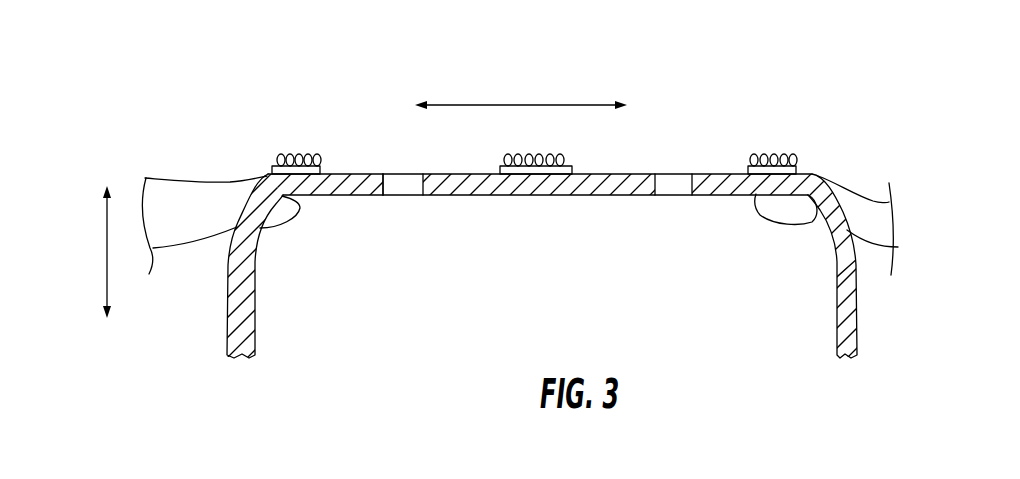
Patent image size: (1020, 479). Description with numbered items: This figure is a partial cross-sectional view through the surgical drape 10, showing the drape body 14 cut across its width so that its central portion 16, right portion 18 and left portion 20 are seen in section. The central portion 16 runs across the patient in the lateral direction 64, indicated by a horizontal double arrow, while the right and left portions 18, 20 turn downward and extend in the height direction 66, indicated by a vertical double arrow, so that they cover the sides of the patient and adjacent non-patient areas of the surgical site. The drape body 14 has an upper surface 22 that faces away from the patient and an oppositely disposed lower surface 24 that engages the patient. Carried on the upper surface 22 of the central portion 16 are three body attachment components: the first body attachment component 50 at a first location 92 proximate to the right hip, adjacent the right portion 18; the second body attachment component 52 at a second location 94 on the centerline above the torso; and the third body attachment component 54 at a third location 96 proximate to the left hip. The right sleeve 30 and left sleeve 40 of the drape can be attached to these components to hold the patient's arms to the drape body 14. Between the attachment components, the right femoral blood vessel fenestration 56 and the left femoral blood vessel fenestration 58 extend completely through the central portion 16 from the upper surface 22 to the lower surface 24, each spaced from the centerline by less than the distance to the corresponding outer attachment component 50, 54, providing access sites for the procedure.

The surgical drape 10 is at (848, 94).
The drape body 14 is at (633, 192).
The central portion 16 is at (370, 193).
The right portion 18 is at (250, 317).
The left portion 20 is at (857, 324).
The upper surface 22 is at (636, 160).
The lower surface 24 is at (748, 206).
The right sleeve 30 is at (186, 199).
The left sleeve 40 is at (860, 204).
The first body attachment component 50 is at (321, 168).
The second body attachment component 52 is at (570, 163).
The third body attachment component 54 is at (792, 157).
The right femoral blood vessel fenestration 56 is at (408, 193).
The left femoral blood vessel fenestration 58 is at (672, 197).
The lateral direction 64 is at (527, 105).
The height direction 66 is at (105, 252).
The first location 92 is at (299, 156).
The second location 94 is at (548, 153).
The third location 96 is at (775, 158).